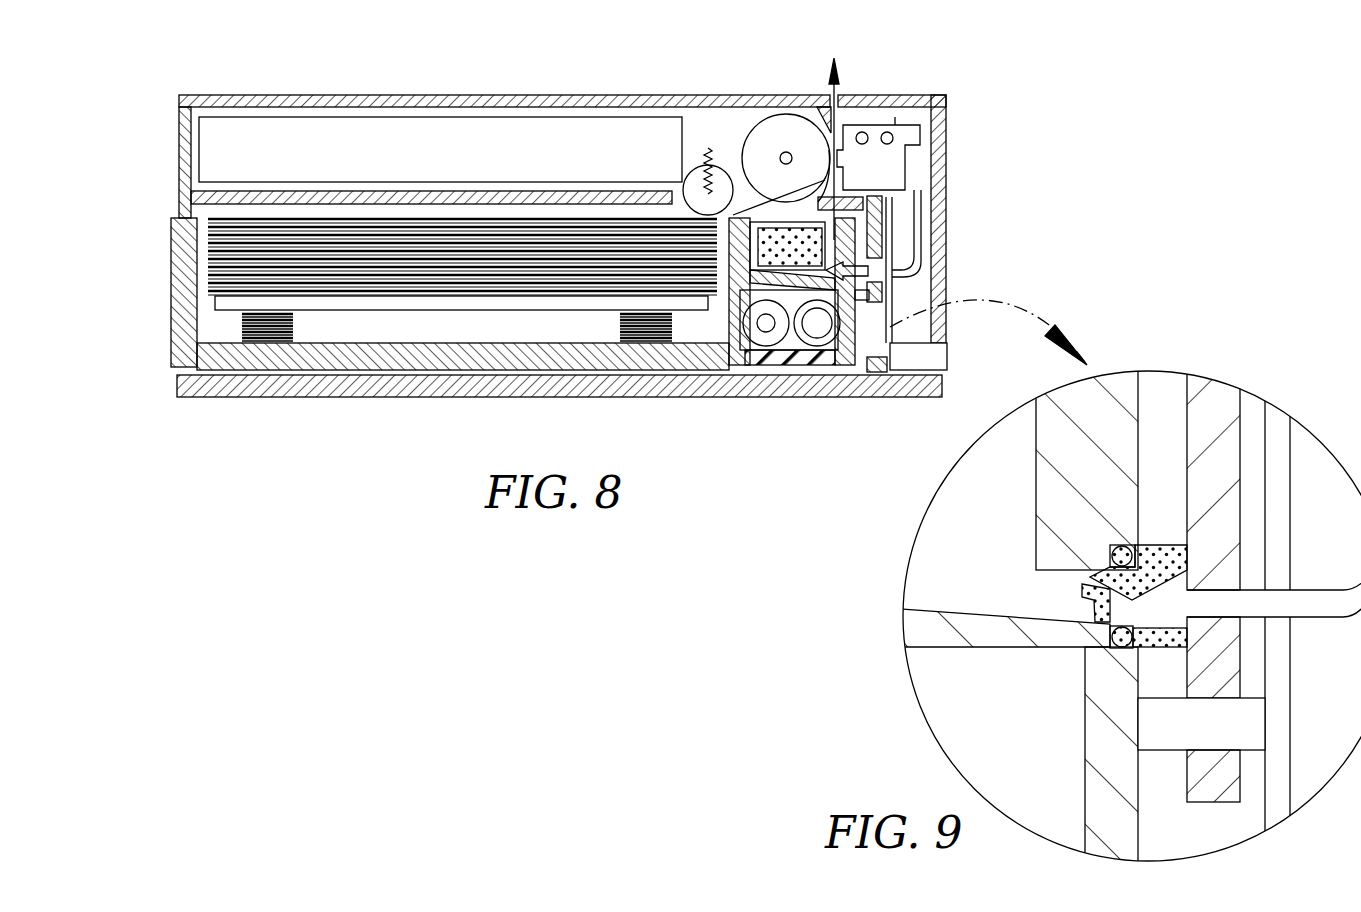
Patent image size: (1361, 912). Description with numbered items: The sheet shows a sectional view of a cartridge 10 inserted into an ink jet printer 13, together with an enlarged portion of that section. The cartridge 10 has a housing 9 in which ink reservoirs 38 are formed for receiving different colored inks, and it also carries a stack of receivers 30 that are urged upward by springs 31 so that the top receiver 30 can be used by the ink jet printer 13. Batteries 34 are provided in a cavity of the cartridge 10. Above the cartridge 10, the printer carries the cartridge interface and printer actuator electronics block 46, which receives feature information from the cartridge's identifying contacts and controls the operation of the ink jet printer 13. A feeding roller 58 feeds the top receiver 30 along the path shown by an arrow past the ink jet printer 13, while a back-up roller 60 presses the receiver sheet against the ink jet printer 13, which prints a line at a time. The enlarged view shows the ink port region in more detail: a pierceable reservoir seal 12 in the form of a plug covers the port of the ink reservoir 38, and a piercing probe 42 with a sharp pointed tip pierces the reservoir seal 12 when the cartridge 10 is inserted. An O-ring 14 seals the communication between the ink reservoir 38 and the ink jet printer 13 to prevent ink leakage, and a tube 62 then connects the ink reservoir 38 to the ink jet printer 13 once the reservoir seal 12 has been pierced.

In FIG. 9, the housing 9 is at (1087, 743).
In FIG. 8, the cartridge 10 is at (172, 278).
In FIG. 9, the reservoir seal 12 is at (1080, 592).
In FIG. 8, the ink jet printer 13 is at (248, 93).
In FIG. 9, the O-ring 14 is at (1087, 650).
In FIG. 8, the receiver 30 is at (205, 240).
In FIG. 8, the spring 31 is at (293, 320).
In FIG. 8, the battery 34 is at (790, 364).
In FIG. 9, the ink reservoir 38 is at (928, 548).
In FIG. 9, the piercing probe 42 is at (1080, 575).
In FIG. 8, the cartridge interface and printer actuator electronics block 46 is at (468, 117).
In FIG. 8, the feeding roller 58 is at (716, 194).
In FIG. 8, the back-up roller 60 is at (800, 125).
In FIG. 8, the tube 62 is at (943, 308).
In FIG. 9, the tube 62 is at (1249, 605).